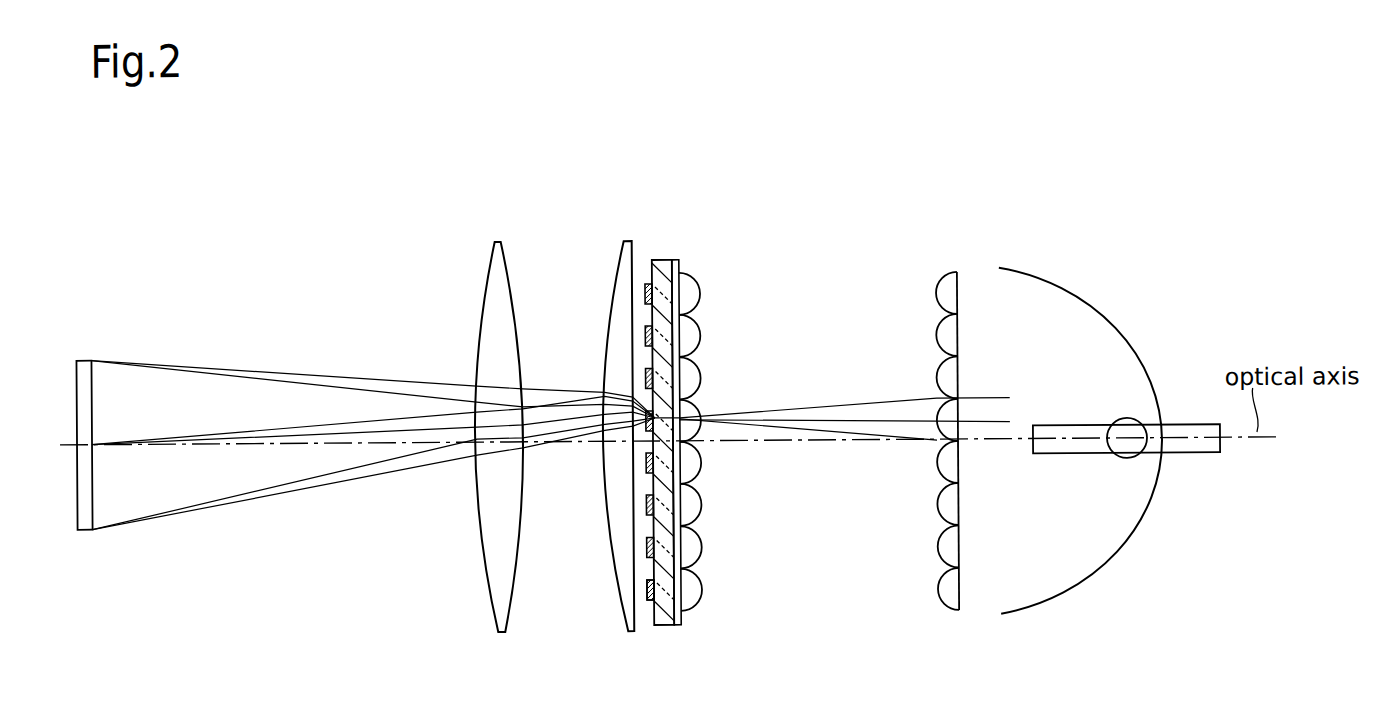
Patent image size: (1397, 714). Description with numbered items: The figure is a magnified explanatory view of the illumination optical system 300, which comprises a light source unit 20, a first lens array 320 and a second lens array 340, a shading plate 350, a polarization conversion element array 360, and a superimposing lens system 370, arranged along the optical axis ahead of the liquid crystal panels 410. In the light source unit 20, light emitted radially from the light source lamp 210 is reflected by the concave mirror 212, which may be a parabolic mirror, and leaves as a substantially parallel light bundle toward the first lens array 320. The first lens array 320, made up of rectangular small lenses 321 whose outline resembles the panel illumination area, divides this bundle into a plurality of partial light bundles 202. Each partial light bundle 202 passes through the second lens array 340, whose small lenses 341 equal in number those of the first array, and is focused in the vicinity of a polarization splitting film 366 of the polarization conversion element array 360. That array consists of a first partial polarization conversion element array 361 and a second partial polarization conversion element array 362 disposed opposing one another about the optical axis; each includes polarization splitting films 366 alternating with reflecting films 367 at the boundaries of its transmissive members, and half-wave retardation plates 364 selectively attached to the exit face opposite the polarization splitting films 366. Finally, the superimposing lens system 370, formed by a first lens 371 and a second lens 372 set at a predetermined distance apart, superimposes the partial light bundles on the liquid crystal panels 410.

The illumination optical system 300 is at (776, 118).
The light source unit 20 is at (1110, 224).
The light source lamp 210 is at (1135, 462).
The concave mirror 212 is at (1116, 331).
The partial light bundle 202 is at (838, 406).
The first lens array 320 is at (906, 410).
The small lens 321 is at (937, 296).
The second lens array 340 is at (725, 428).
The small lens 341 is at (700, 336).
The shading plate 350 is at (677, 264).
The polarization conversion element array 360 is at (662, 246).
The first partial polarization conversion element array 361 is at (652, 282).
The second partial polarization conversion element array 362 is at (677, 626).
The λ/2 retardation plate 364 is at (648, 601).
The polarization splitting film 366 is at (697, 553).
The reflecting film 367 is at (697, 572).
The superimposing lens system 370 is at (588, 193).
The first lens 371 is at (613, 292).
The second lens 372 is at (483, 288).
The liquid crystal panel 410 is at (86, 527).